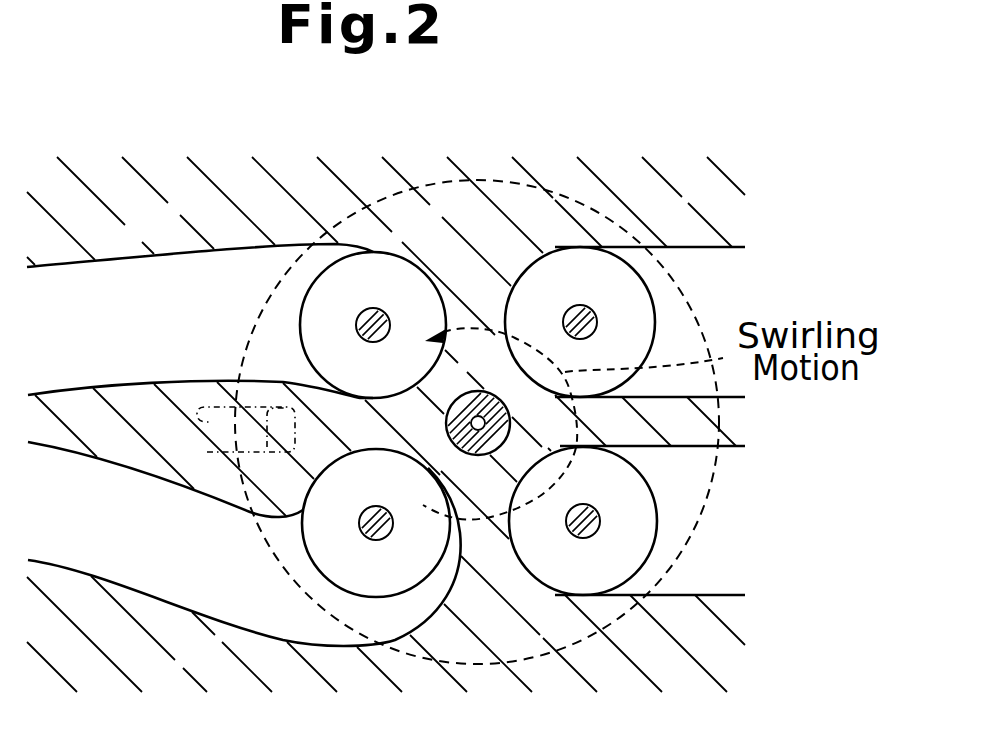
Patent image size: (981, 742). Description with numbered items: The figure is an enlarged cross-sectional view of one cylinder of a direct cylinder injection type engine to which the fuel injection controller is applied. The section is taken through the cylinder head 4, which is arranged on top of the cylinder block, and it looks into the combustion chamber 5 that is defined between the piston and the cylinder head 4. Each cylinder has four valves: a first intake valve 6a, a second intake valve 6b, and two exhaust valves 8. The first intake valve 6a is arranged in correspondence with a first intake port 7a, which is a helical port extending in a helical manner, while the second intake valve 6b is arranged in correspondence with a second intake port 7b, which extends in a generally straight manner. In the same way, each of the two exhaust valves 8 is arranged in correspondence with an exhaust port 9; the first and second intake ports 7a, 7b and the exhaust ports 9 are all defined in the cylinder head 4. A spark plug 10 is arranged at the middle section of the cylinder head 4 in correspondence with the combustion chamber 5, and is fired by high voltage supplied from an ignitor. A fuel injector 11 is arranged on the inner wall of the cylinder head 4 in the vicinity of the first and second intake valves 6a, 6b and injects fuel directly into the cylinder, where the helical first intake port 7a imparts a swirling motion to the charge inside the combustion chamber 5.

The cylinder head 4 is at (689, 180).
The combustion chamber 5 is at (472, 195).
The first intake valve 6a is at (390, 575).
The second intake valve 6b is at (393, 270).
The first intake port 7a is at (210, 597).
The second intake port 7b is at (180, 270).
The exhaust valve 8 is at (570, 264).
The exhaust port 9 is at (699, 257).
The spark plug 10 is at (490, 391).
The fuel injector 11 is at (200, 393).